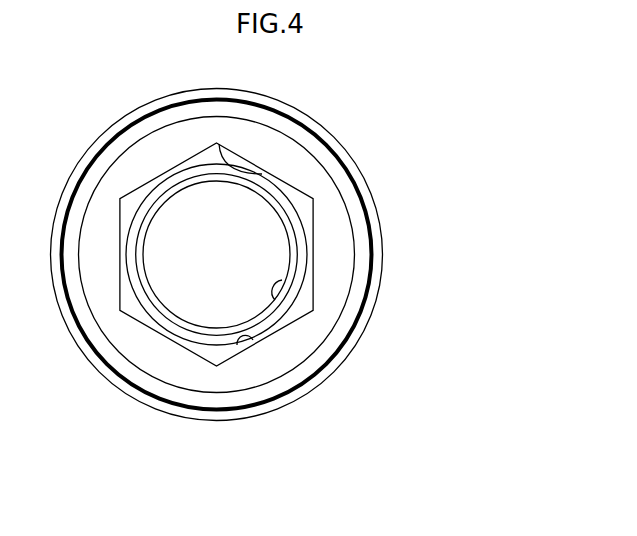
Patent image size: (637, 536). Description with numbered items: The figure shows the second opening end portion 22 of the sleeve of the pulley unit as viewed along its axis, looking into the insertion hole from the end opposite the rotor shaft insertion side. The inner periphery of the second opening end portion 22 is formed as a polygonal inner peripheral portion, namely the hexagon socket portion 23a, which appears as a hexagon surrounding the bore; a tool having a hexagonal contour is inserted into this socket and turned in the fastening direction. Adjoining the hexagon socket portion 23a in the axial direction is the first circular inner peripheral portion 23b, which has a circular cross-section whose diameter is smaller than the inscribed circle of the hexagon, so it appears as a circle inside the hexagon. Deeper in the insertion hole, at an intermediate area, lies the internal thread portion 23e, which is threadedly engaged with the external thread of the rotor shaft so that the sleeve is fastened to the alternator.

The second opening end portion 22 is at (248, 137).
The hexagon socket portion 23a is at (238, 172).
The internal thread portion 23e is at (277, 283).
The first circular inner peripheral portion 23b is at (256, 342).